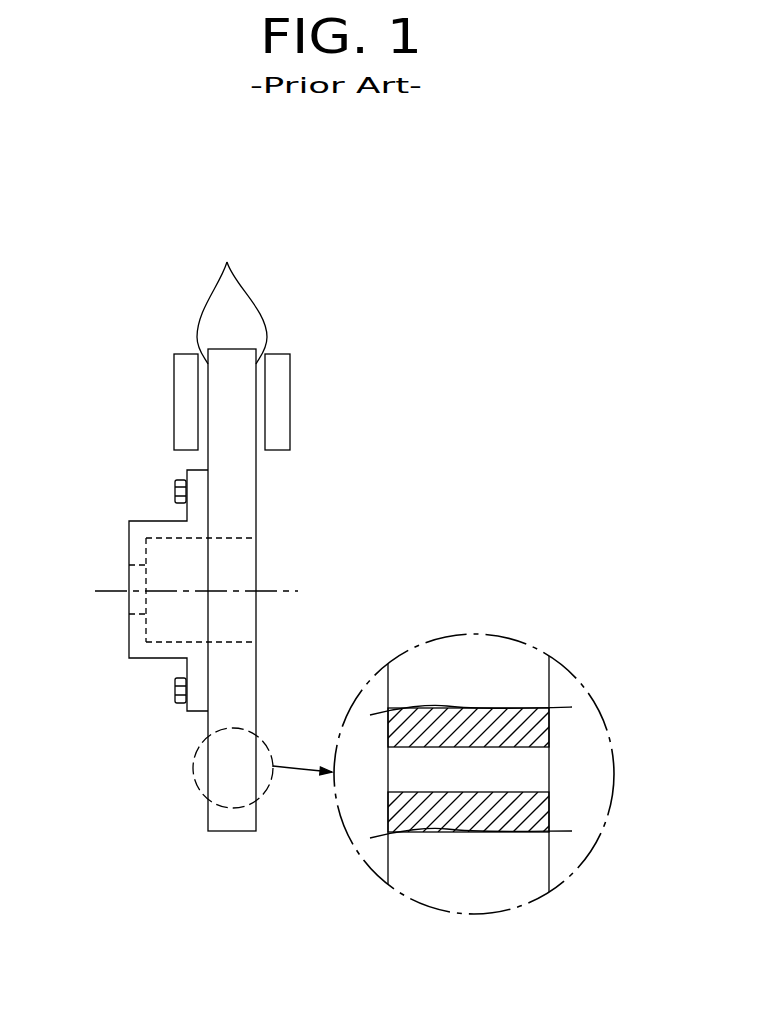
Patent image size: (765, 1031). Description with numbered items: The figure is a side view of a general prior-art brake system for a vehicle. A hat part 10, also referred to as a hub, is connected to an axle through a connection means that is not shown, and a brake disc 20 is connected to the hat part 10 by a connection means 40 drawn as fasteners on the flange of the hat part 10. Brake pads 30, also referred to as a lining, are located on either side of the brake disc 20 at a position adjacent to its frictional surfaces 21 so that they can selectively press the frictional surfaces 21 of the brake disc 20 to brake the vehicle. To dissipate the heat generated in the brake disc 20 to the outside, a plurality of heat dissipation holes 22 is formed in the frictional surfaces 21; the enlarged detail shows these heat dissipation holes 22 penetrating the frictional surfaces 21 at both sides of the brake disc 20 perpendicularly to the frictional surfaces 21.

The hat part 10 is at (140, 667).
The brake disc 20 is at (262, 503).
The frictional surfaces 21 is at (658, 873).
The heat dissipation holes 22 is at (522, 747).
The brake pads 30 is at (165, 405).
The connection means 40 is at (168, 490).